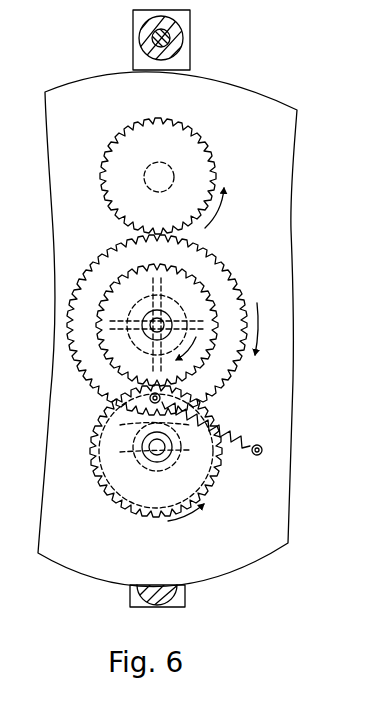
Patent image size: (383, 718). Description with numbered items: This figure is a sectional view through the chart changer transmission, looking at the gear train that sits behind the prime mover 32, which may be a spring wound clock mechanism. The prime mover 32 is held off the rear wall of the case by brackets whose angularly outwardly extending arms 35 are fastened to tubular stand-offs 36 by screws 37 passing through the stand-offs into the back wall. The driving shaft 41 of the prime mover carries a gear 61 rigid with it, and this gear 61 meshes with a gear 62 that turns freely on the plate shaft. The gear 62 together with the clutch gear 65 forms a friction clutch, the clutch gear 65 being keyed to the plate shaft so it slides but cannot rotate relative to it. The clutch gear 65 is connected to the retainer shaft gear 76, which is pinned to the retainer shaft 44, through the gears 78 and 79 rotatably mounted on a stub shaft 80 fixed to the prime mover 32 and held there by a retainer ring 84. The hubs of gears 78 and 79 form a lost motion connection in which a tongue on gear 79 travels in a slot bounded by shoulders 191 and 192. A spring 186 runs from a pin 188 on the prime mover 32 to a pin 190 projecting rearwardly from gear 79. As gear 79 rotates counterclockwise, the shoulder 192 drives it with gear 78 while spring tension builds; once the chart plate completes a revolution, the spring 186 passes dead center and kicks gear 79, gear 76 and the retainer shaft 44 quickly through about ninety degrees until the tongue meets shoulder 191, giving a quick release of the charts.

The prime mover 32 is at (270, 556).
The angularly outwardly extending arms 35 is at (188, 50).
The stand-offs 36 is at (180, 32).
The screws 37 is at (152, 38).
The driving shaft 41 is at (174, 178).
The retainer shaft 44 is at (155, 324).
The gear 61 is at (205, 140).
The gear 62 is at (218, 282).
The clutch gear 65 is at (195, 262).
The retainer shaft gear 76 is at (191, 308).
The gear 78 is at (103, 494).
The gear 79 is at (208, 490).
The stub shaft 80 is at (167, 452).
The retainer ring 84 is at (159, 462).
The spring 186 is at (228, 432).
The pin 188 is at (258, 455).
The pin 190 is at (150, 398).
The shoulder 191 is at (134, 452).
The shoulder 192 is at (130, 432).